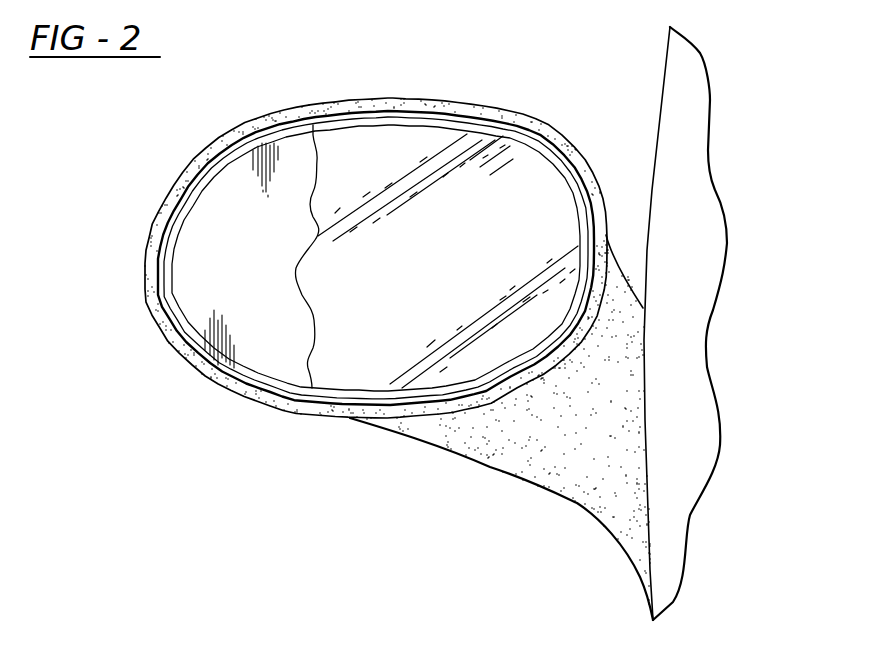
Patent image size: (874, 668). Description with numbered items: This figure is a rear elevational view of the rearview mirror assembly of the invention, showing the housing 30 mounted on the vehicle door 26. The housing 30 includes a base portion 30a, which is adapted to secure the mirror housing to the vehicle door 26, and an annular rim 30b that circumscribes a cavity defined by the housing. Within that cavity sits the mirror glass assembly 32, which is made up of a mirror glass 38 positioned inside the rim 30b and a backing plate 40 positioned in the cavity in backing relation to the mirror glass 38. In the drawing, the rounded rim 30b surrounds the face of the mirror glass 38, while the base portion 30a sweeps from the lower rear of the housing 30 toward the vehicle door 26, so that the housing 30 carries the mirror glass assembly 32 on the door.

The vehicle door 26 is at (670, 502).
The housing 30 is at (613, 215).
The base portion 30a is at (620, 278).
The annular rim 30b is at (260, 117).
The mirror glass assembly 32 is at (385, 328).
The mirror glass 38 is at (446, 263).
The backing plate 40 is at (257, 273).